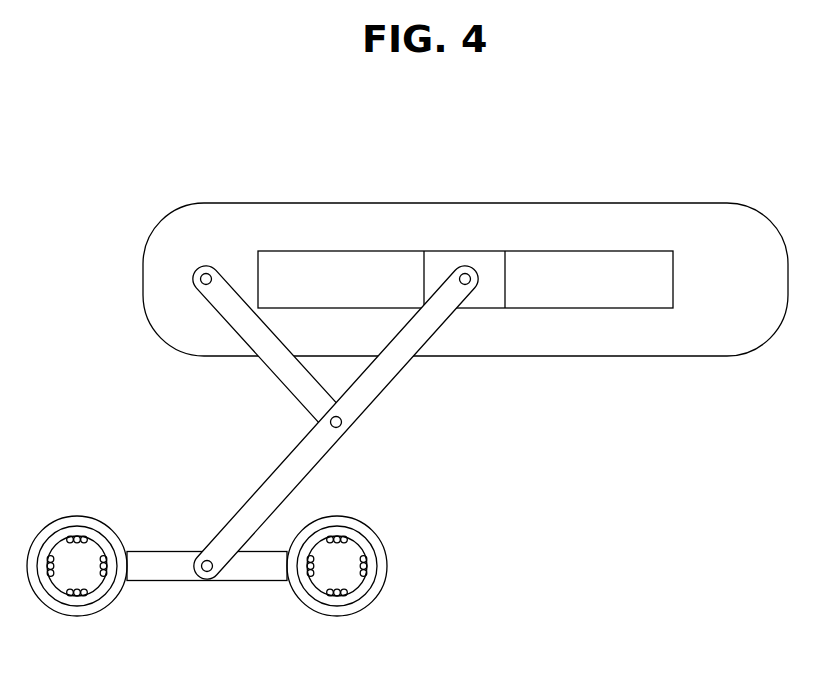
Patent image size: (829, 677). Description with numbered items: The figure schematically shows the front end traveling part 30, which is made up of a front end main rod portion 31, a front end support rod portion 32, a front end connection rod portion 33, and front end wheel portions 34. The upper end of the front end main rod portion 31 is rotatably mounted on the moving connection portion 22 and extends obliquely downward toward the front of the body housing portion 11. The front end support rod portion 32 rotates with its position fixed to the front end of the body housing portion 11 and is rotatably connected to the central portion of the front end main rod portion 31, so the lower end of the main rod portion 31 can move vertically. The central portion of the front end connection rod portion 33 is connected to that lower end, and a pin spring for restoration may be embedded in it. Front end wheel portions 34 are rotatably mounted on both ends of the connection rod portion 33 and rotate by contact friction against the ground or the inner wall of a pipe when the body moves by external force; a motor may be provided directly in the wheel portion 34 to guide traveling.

The body housing portion 11 is at (763, 212).
The moving connection portion 22 is at (492, 262).
The front end traveling part 30 is at (290, 472).
The front end main rod portion 31 is at (397, 380).
The front end support rod portion 32 is at (295, 380).
The front end connection rod portion 33 is at (257, 583).
The front end wheel portion 34 is at (367, 605).